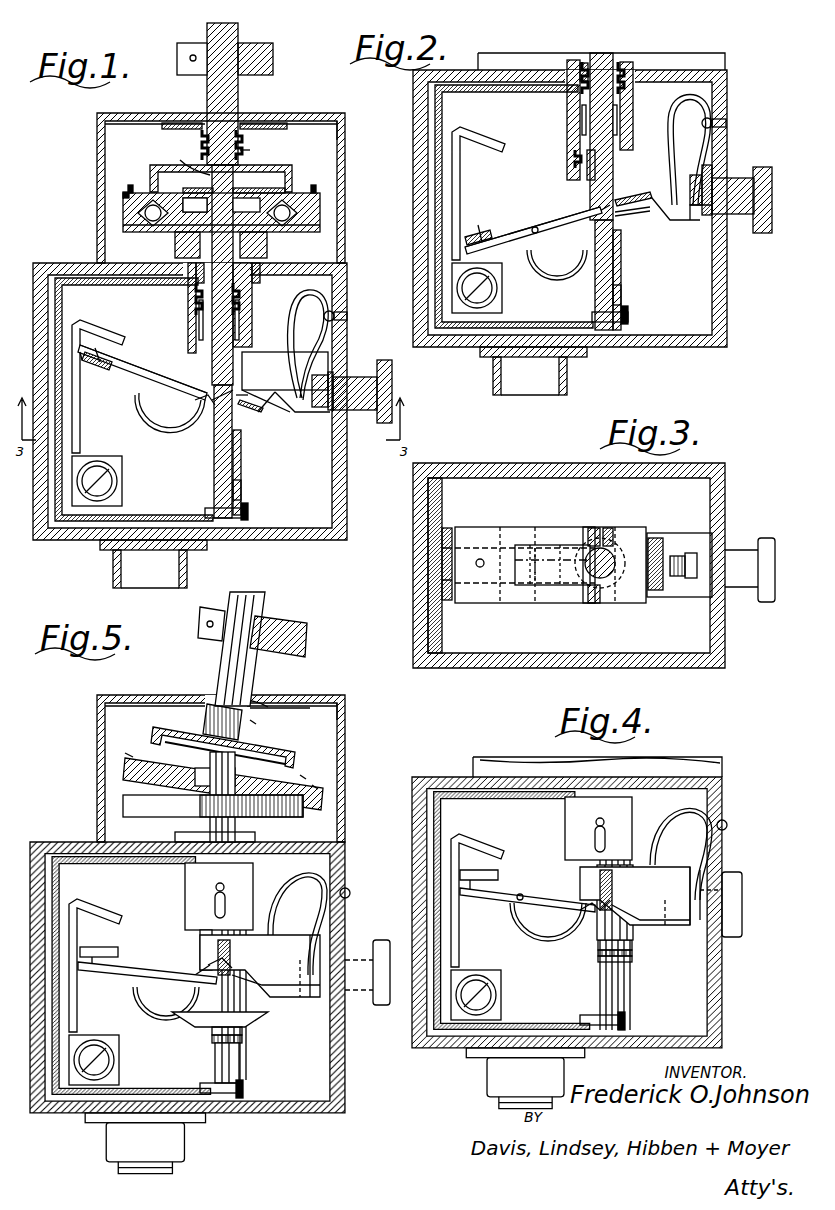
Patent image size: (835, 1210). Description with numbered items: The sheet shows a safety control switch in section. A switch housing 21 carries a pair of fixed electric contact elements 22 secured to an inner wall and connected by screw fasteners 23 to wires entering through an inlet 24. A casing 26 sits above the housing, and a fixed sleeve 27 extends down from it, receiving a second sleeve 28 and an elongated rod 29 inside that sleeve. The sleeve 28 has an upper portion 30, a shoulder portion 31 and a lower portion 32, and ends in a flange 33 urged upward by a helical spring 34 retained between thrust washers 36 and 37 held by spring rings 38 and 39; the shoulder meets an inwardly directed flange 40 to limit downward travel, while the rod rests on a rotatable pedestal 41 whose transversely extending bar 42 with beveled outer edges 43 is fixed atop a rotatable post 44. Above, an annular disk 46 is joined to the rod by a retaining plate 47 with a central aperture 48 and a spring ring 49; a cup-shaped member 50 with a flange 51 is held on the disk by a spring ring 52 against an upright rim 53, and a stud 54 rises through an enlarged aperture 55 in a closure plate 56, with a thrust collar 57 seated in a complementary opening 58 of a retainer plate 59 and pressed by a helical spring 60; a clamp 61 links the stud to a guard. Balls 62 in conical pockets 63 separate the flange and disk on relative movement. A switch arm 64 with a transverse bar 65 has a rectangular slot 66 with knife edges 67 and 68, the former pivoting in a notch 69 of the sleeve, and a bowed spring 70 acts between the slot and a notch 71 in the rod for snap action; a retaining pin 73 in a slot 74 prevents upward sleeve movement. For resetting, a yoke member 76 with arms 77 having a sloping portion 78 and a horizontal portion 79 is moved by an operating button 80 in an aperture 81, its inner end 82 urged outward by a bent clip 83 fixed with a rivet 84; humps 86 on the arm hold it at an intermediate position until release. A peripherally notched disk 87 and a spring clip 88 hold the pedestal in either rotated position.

In FIG. 1, the switch housing 21 is at (340, 476).
In FIG. 2, the switch housing 21 is at (727, 298).
In FIG. 3, the switch housing 21 is at (725, 650).
In FIG. 4, the switch housing 21 is at (722, 985).
In FIG. 5, the switch housing 21 is at (345, 1060).
In FIG. 1, the fixed electric contact elements 22 is at (90, 330).
In FIG. 2, the fixed electric contact elements 22 is at (487, 132).
In FIG. 3, the fixed electric contact elements 22 is at (455, 528).
In FIG. 4, the fixed electric contact elements 22 is at (487, 843).
In FIG. 5, the fixed electric contact elements 22 is at (97, 910).
In FIG. 1, the screw fasteners 23 is at (110, 481).
In FIG. 2, the screw fasteners 23 is at (497, 292).
In FIG. 4, the screw fasteners 23 is at (475, 975).
In FIG. 5, the screw fasteners 23 is at (92, 1040).
In FIG. 1, the inlet 24 is at (188, 562).
In FIG. 2, the inlet 24 is at (567, 372).
In FIG. 4, the inlet 24 is at (488, 1075).
In FIG. 5, the inlet 24 is at (170, 1148).
In FIG. 1, the casing 26 is at (345, 194).
In FIG. 2, the casing 26 is at (725, 58).
In FIG. 4, the casing 26 is at (722, 772).
In FIG. 5, the casing 26 is at (345, 733).
In FIG. 1, the fixed sleeve 27 is at (186, 312).
In FIG. 2, the fixed sleeve 27 is at (567, 118).
In FIG. 4, the fixed sleeve 27 is at (565, 814).
In FIG. 5, the fixed sleeve 27 is at (185, 884).
In FIG. 1, the second sleeve 28 is at (258, 298).
In FIG. 2, the second sleeve 28 is at (580, 103).
In FIG. 1, the elongated rod 29 is at (285, 371).
In FIG. 2, the elongated rod 29 is at (580, 140).
In FIG. 3, the elongated rod 29 is at (592, 578).
In FIG. 4, the elongated rod 29 is at (632, 940).
In FIG. 5, the elongated rod 29 is at (250, 910).
In FIG. 1, the upper portion 30 is at (198, 247).
In FIG. 2, the upper portion 30 is at (610, 60).
In FIG. 5, the upper portion 30 is at (255, 832).
In FIG. 1, the shoulder portion 31 is at (199, 322).
In FIG. 2, the shoulder portion 31 is at (582, 136).
In FIG. 1, the lower portion 32 is at (245, 329).
In FIG. 2, the lower portion 32 is at (587, 170).
In FIG. 3, the lower portion 32 is at (625, 585).
In FIG. 5, the lower portion 32 is at (200, 936).
In FIG. 1, the flange 33 is at (320, 225).
In FIG. 5, the flange 33 is at (303, 803).
In FIG. 1, the helical spring 34 is at (196, 298).
In FIG. 2, the helical spring 34 is at (585, 60).
In FIG. 1, the thrust washer 36 is at (175, 245).
In FIG. 1, the thrust washer 37 is at (252, 317).
In FIG. 2, the thrust washer 37 is at (633, 105).
In FIG. 1, the spring ring 38 is at (195, 204).
In FIG. 1, the spring ring 39 is at (196, 338).
In FIG. 1, the inwardly directed flange 40 is at (245, 342).
In FIG. 2, the inwardly directed flange 40 is at (575, 161).
In FIG. 1, the rotatable pedestal 41 is at (238, 472).
In FIG. 2, the rotatable pedestal 41 is at (617, 278).
In FIG. 4, the rotatable pedestal 41 is at (590, 995).
In FIG. 5, the rotatable pedestal 41 is at (245, 1063).
In FIG. 1, the transversely extending bar 42 is at (241, 445).
In FIG. 2, the transversely extending bar 42 is at (621, 255).
In FIG. 4, the transversely extending bar 42 is at (598, 945).
In FIG. 5, the transversely extending bar 42 is at (242, 1031).
In FIG. 4, the beveled outer edges 43 is at (632, 960).
In FIG. 5, the beveled outer edges 43 is at (190, 1022).
In FIG. 1, the rotatable post 44 is at (241, 491).
In FIG. 2, the rotatable post 44 is at (621, 298).
In FIG. 4, the rotatable post 44 is at (625, 990).
In FIG. 5, the rotatable post 44 is at (212, 1040).
In FIG. 1, the annular disk 46 is at (322, 213).
In FIG. 5, the annular disk 46 is at (123, 765).
In FIG. 1, the retaining plate 47 is at (290, 180).
In FIG. 5, the retaining plate 47 is at (290, 760).
In FIG. 1, the central aperture 48 is at (235, 180).
In FIG. 5, the central aperture 48 is at (285, 760).
In FIG. 1, the spring ring 49 is at (190, 157).
In FIG. 5, the spring ring 49 is at (210, 775).
In FIG. 1, the cup-shaped member 50 is at (285, 158).
In FIG. 5, the cup-shaped member 50 is at (300, 745).
In FIG. 1, the flange 51 is at (133, 183).
In FIG. 5, the flange 51 is at (305, 778).
In FIG. 1, the spring ring 52 is at (320, 190).
In FIG. 5, the spring ring 52 is at (318, 788).
In FIG. 1, the upright rim 53 is at (123, 194).
In FIG. 5, the upright rim 53 is at (125, 755).
In FIG. 1, the stud 54 is at (238, 97).
In FIG. 5, the stud 54 is at (228, 661).
In FIG. 1, the enlarged aperture 55 is at (268, 123).
In FIG. 5, the enlarged aperture 55 is at (202, 702).
In FIG. 1, the closure plate 56 is at (330, 115).
In FIG. 5, the closure plate 56 is at (330, 700).
In FIG. 1, the thrust collar 57 is at (180, 128).
In FIG. 5, the thrust collar 57 is at (262, 700).
In FIG. 1, the complementary opening 58 is at (240, 137).
In FIG. 1, the retainer plate 59 is at (270, 130).
In FIG. 5, the retainer plate 59 is at (285, 705).
In FIG. 1, the helical spring 60 is at (242, 157).
In FIG. 5, the helical spring 60 is at (242, 722).
In FIG. 1, the clamp 61 is at (258, 45).
In FIG. 5, the clamp 61 is at (290, 625).
In FIG. 1, the balls 62 is at (138, 204).
In FIG. 1, the conical pockets 63 is at (145, 224).
In FIG. 1, the switch arm 64 is at (122, 380).
In FIG. 2, the switch arm 64 is at (515, 240).
In FIG. 3, the switch arm 64 is at (560, 525).
In FIG. 4, the switch arm 64 is at (495, 903).
In FIG. 5, the switch arm 64 is at (125, 975).
In FIG. 1, the transverse bar 65 is at (112, 358).
In FIG. 2, the transverse bar 65 is at (480, 235).
In FIG. 3, the transverse bar 65 is at (500, 550).
In FIG. 4, the transverse bar 65 is at (498, 875).
In FIG. 5, the transverse bar 65 is at (118, 955).
In FIG. 1, the rectangular slot 66 is at (185, 388).
In FIG. 2, the rectangular slot 66 is at (555, 235).
In FIG. 3, the rectangular slot 66 is at (556, 595).
In FIG. 1, the knife edge 67 is at (240, 410).
In FIG. 2, the knife edge 67 is at (630, 212).
In FIG. 3, the knife edge 67 is at (612, 530).
In FIG. 1, the knife edge 68 is at (122, 360).
In FIG. 2, the knife edge 68 is at (535, 240).
In FIG. 3, the knife edge 68 is at (540, 550).
In FIG. 1, the notch 69 is at (245, 400).
In FIG. 2, the notch 69 is at (622, 218).
In FIG. 3, the notch 69 is at (645, 530).
In FIG. 1, the bowed spring 70 is at (170, 432).
In FIG. 2, the bowed spring 70 is at (565, 277).
In FIG. 3, the bowed spring 70 is at (552, 565).
In FIG. 4, the bowed spring 70 is at (535, 935).
In FIG. 5, the bowed spring 70 is at (150, 1012).
In FIG. 1, the notch 71 is at (198, 412).
In FIG. 3, the notch 71 is at (565, 540).
In FIG. 4, the notch 71 is at (582, 925).
In FIG. 5, the notch 71 is at (200, 970).
In FIG. 4, the retaining pin 73 is at (596, 822).
In FIG. 5, the retaining pin 73 is at (216, 888).
In FIG. 4, the slot 74 is at (595, 852).
In FIG. 5, the slot 74 is at (215, 917).
In FIG. 1, the yoke member 76 is at (300, 425).
In FIG. 2, the yoke member 76 is at (698, 228).
In FIG. 3, the yoke member 76 is at (675, 540).
In FIG. 4, the yoke member 76 is at (645, 860).
In FIG. 5, the yoke member 76 is at (310, 1000).
In FIG. 1, the arms 77 is at (333, 340).
In FIG. 2, the arms 77 is at (665, 175).
In FIG. 3, the arms 77 is at (655, 564).
In FIG. 4, the arms 77 is at (635, 896).
In FIG. 5, the arms 77 is at (320, 935).
In FIG. 1, the sloping portion 78 is at (292, 418).
In FIG. 2, the sloping portion 78 is at (668, 225).
In FIG. 4, the sloping portion 78 is at (635, 925).
In FIG. 5, the sloping portion 78 is at (262, 988).
In FIG. 1, the horizontal portion 79 is at (250, 392).
In FIG. 2, the horizontal portion 79 is at (635, 198).
In FIG. 4, the horizontal portion 79 is at (612, 895).
In FIG. 5, the horizontal portion 79 is at (245, 975).
In FIG. 1, the operating button 80 is at (392, 372).
In FIG. 2, the operating button 80 is at (763, 233).
In FIG. 3, the operating button 80 is at (766, 602).
In FIG. 4, the operating button 80 is at (742, 910).
In FIG. 5, the operating button 80 is at (382, 1005).
In FIG. 1, the aperture 81 is at (355, 377).
In FIG. 2, the aperture 81 is at (735, 178).
In FIG. 3, the aperture 81 is at (735, 550).
In FIG. 4, the aperture 81 is at (735, 880).
In FIG. 5, the aperture 81 is at (350, 960).
In FIG. 1, the inner end 82 is at (325, 415).
In FIG. 2, the inner end 82 is at (706, 165).
In FIG. 3, the inner end 82 is at (693, 580).
In FIG. 4, the inner end 82 is at (668, 928).
In FIG. 5, the inner end 82 is at (310, 1000).
In FIG. 1, the bent clip 83 is at (308, 345).
In FIG. 2, the bent clip 83 is at (677, 150).
In FIG. 3, the bent clip 83 is at (678, 578).
In FIG. 4, the bent clip 83 is at (660, 845).
In FIG. 5, the bent clip 83 is at (292, 890).
In FIG. 1, the rivet 84 is at (347, 315).
In FIG. 2, the rivet 84 is at (726, 124).
In FIG. 4, the rivet 84 is at (727, 826).
In FIG. 5, the rivet 84 is at (350, 892).
In FIG. 1, the humps 86 is at (212, 385).
In FIG. 2, the humps 86 is at (595, 210).
In FIG. 3, the humps 86 is at (595, 528).
In FIG. 4, the humps 86 is at (595, 907).
In FIG. 5, the humps 86 is at (232, 960).
In FIG. 1, the peripherally notched disk 87 is at (205, 512).
In FIG. 2, the peripherally notched disk 87 is at (592, 316).
In FIG. 4, the peripherally notched disk 87 is at (580, 1019).
In FIG. 5, the peripherally notched disk 87 is at (200, 1086).
In FIG. 1, the spring clip 88 is at (249, 510).
In FIG. 2, the spring clip 88 is at (629, 312).
In FIG. 4, the spring clip 88 is at (626, 1020).
In FIG. 5, the spring clip 88 is at (244, 1086).